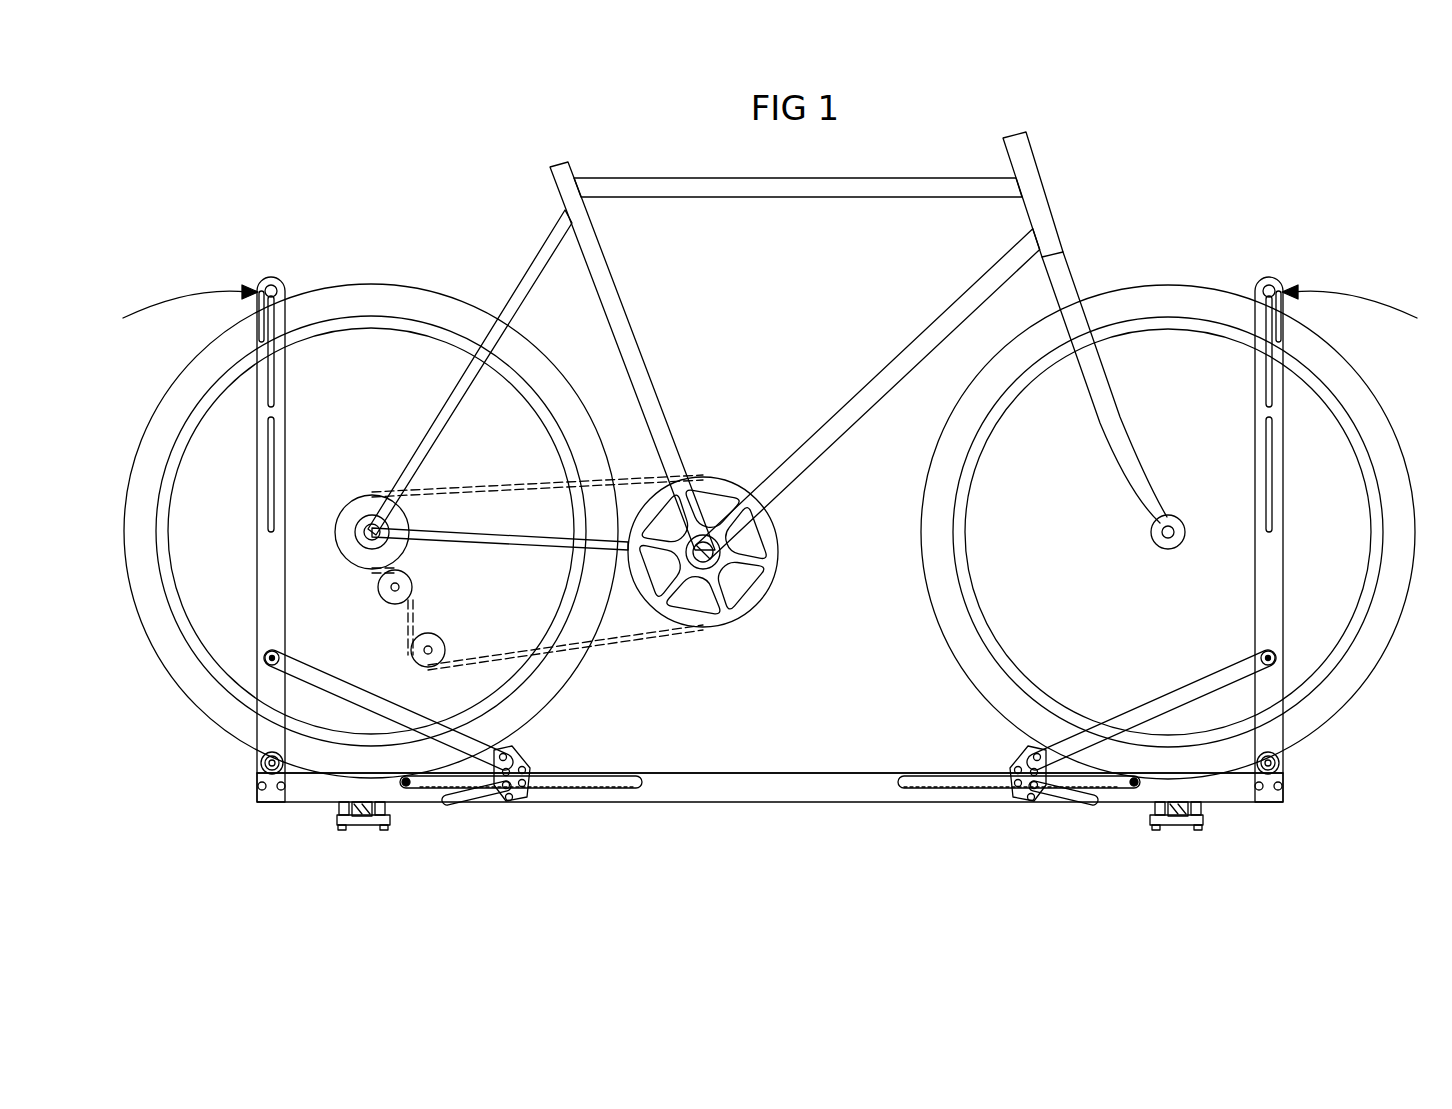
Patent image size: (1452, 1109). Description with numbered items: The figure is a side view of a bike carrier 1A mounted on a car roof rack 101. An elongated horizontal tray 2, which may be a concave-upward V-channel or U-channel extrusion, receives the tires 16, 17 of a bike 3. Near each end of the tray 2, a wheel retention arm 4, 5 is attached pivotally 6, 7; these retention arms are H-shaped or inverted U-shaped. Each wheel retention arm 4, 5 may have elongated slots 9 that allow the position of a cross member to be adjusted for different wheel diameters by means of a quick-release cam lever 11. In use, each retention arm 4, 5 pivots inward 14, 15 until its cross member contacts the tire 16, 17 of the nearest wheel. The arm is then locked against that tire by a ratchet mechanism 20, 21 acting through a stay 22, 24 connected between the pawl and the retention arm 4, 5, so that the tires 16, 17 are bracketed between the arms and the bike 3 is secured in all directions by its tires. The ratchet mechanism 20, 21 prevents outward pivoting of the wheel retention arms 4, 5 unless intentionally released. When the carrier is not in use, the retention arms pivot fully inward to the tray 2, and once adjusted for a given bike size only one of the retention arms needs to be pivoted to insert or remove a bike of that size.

The bike carrier 1A is at (826, 680).
The elongated horizontal tray 2 is at (751, 782).
The bike 3 is at (1098, 162).
The wheel retention arm 4 is at (267, 575).
The wheel retention arm 5 is at (1274, 575).
The pivotal attachment 6 is at (262, 766).
The pivotal attachment 7 is at (1282, 766).
The elongated slots 9 is at (269, 463).
The quick-release cam lever 11 is at (263, 325).
The inward pivoting direction 14 is at (185, 303).
The inward pivoting direction 15 is at (1355, 303).
The tire 16 is at (378, 302).
The tire 17 is at (1166, 302).
The ratchet mechanism 20 is at (505, 828).
The ratchet mechanism 21 is at (1035, 828).
The stay 22 is at (337, 690).
The stay 24 is at (1182, 690).
The car roof rack 101 is at (365, 822).